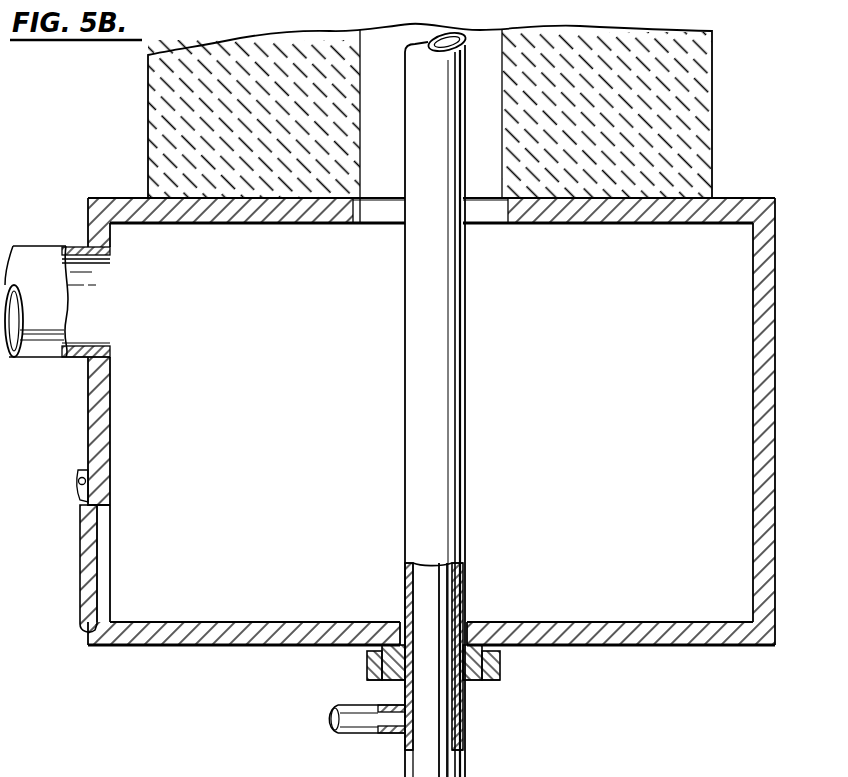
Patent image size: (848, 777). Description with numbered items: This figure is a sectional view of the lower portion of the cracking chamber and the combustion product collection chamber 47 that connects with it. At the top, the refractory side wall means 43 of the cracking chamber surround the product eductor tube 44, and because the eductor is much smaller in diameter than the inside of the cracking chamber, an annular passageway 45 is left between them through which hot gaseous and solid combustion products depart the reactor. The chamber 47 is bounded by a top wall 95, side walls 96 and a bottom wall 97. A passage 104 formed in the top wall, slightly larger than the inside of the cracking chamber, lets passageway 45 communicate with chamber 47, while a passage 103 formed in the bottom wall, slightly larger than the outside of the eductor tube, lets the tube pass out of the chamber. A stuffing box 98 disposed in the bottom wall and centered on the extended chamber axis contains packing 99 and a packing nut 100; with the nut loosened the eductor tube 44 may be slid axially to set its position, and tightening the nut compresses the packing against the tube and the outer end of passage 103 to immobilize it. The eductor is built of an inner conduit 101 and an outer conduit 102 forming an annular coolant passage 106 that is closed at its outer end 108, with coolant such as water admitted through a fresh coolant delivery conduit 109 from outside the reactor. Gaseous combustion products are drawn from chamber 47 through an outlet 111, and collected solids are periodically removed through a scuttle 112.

The side wall means 43 is at (703, 108).
The product eductor tube 44 is at (473, 437).
The annular passageway 45 is at (495, 106).
The combustion product collection chamber 47 is at (618, 494).
The top wall 95 is at (731, 212).
The side walls 96 is at (95, 419).
The bottom wall 97 is at (682, 640).
The stuffing box 98 is at (512, 674).
The packing 99 is at (380, 656).
The packing nut 100 is at (366, 681).
The inner conduit 101 is at (418, 583).
The outer conduit 102 is at (405, 605).
The passage 103 is at (467, 615).
The passage 104 is at (495, 213).
The annular coolant passage 106 is at (450, 581).
The outer end of coolant passage 108 is at (455, 750).
The fresh coolant delivery conduit 109 is at (352, 720).
The outlet 111 is at (40, 262).
The scuttle 112 is at (82, 594).